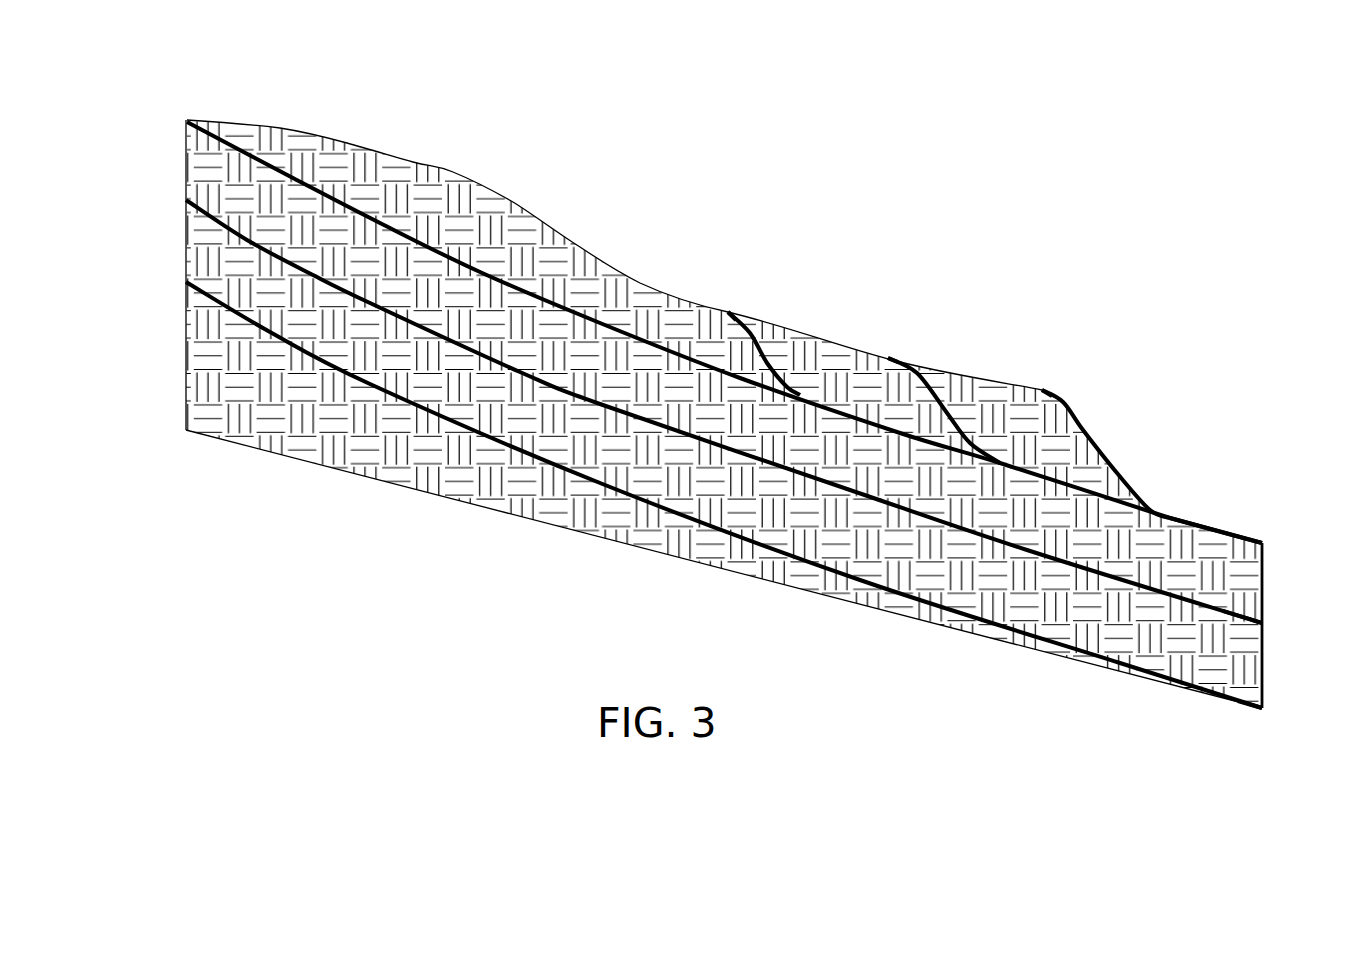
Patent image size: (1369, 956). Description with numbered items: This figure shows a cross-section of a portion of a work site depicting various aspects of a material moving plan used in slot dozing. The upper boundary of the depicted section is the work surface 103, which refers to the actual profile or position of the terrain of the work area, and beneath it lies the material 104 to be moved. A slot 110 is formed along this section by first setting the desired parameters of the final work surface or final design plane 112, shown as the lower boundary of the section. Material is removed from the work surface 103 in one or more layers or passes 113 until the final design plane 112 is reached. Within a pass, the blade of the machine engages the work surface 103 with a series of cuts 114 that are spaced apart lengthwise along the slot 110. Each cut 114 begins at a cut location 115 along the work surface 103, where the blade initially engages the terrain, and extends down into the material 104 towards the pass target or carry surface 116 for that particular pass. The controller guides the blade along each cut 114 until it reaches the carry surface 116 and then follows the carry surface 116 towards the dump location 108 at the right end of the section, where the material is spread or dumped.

The work surface 103 is at (453, 172).
The material 104 is at (325, 175).
The dump location 108 is at (1300, 543).
The slot 110 is at (1160, 406).
The final design plane 112 is at (295, 457).
The pass 113 is at (218, 301).
The cut 114 is at (760, 337).
The cut location 115 is at (728, 312).
The carry surface 116 is at (1225, 693).